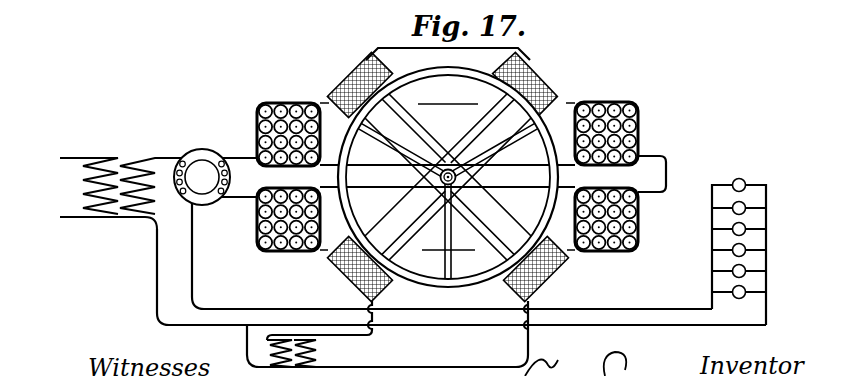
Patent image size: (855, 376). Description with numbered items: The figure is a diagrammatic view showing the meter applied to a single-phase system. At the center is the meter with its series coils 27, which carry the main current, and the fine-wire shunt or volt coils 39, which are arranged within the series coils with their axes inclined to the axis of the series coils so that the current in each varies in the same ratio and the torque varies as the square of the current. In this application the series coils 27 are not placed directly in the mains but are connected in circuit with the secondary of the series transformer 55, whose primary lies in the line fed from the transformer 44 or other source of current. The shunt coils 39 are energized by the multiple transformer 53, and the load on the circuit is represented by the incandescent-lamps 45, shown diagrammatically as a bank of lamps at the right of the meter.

The shunt or volt coils 39 is at (352, 73).
The series coils 27 is at (639, 229).
The transformer 44 is at (117, 182).
The series transformer 55 is at (202, 150).
The incandescent-lamps 45 is at (754, 183).
The multiple transformer 53 is at (318, 352).